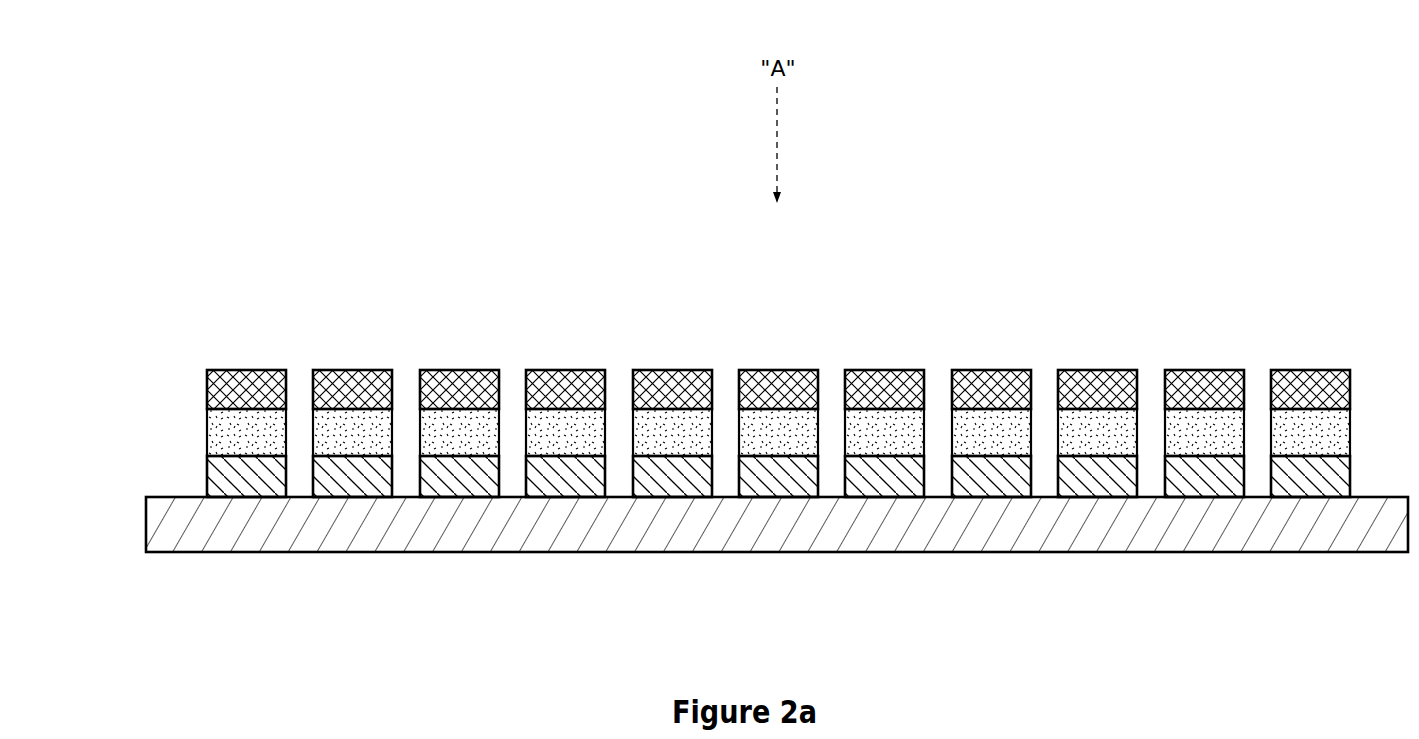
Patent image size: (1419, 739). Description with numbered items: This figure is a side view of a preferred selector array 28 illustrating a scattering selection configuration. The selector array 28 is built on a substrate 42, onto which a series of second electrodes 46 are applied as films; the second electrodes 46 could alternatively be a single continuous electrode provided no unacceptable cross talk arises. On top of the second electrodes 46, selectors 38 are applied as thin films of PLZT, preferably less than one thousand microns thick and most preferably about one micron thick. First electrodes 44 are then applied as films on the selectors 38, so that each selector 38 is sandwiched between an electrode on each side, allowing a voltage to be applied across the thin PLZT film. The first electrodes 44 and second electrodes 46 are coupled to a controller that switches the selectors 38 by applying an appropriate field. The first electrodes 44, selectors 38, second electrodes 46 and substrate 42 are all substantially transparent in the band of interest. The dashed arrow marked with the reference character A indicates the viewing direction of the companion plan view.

The selector array 28 is at (751, 505).
The selector 38 is at (207, 432).
The substrate 42 is at (146, 552).
The first electrode 44 is at (778, 356).
The second electrode 46 is at (1363, 567).